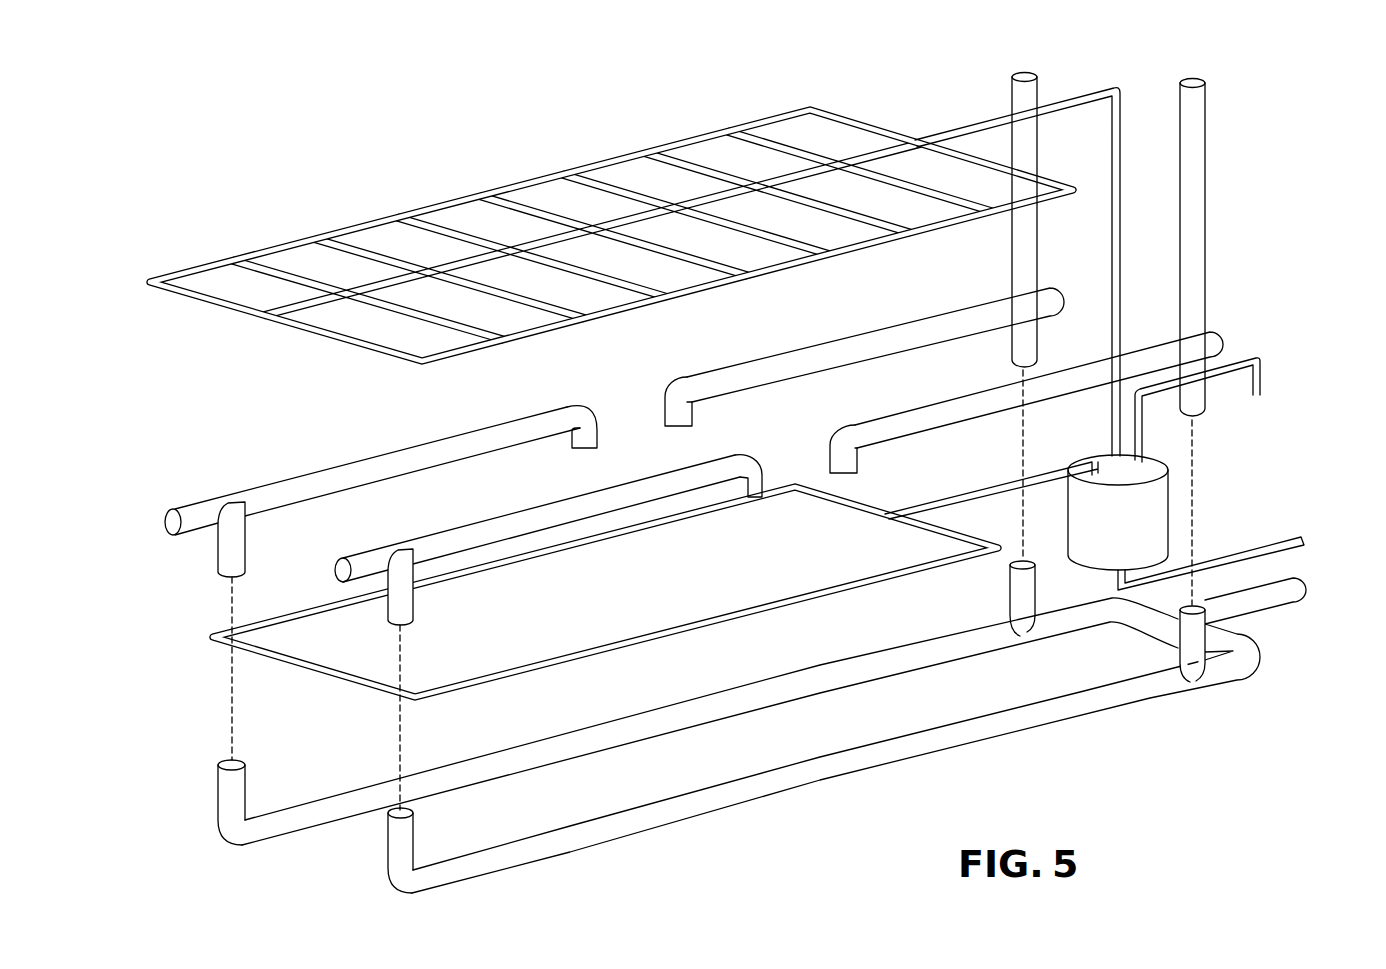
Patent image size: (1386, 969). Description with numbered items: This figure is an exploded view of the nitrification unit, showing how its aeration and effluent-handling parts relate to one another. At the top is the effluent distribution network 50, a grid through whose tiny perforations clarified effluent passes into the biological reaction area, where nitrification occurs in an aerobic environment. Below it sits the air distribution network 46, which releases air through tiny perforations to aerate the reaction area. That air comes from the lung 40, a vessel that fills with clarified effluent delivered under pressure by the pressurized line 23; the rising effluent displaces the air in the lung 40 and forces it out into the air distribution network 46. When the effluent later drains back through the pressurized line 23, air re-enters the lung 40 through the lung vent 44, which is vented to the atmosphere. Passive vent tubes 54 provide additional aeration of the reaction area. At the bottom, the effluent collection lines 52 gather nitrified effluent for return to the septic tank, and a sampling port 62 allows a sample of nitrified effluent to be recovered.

The pressurized line 23 is at (1290, 538).
The lung 40 is at (1170, 503).
The lung vent 44 is at (1262, 378).
The air distribution network 46 is at (622, 646).
The effluent distribution network 50 is at (820, 107).
The effluent collection lines 52 is at (655, 738).
The passive vent tubes 54 is at (563, 405).
The sampling port 62 is at (1205, 84).